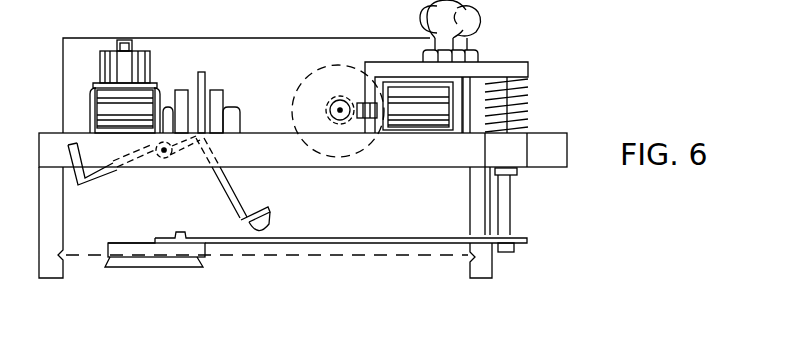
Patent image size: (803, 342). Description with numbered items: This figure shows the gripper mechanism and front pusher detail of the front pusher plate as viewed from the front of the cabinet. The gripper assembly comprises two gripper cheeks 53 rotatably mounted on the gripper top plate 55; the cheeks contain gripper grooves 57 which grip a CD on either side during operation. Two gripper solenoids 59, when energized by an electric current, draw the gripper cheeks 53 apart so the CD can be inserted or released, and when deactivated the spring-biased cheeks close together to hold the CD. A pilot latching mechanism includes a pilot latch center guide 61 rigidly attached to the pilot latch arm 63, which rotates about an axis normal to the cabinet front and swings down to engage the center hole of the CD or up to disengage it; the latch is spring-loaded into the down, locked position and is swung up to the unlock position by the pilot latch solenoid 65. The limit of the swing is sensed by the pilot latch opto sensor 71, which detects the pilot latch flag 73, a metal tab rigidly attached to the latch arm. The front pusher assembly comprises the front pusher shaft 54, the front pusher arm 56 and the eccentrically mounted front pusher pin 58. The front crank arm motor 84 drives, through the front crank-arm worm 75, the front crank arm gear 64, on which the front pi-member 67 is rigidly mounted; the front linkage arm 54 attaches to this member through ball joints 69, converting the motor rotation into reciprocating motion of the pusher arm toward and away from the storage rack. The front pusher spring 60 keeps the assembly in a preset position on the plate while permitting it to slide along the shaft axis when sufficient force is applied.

The gripper cheeks 53 is at (55, 280).
The front pusher shaft 54 is at (515, 206).
The gripper top plate 55 is at (274, 133).
The front pusher arm 56 is at (363, 244).
The gripper grooves 57 is at (66, 254).
The front pusher pin 58 is at (175, 268).
The gripper solenoids 59 is at (103, 103).
The front pusher spring 60 is at (519, 99).
The pilot latch center guide 61 is at (270, 221).
The pilot latch arm 63 is at (196, 154).
The front crank arm gear 64 is at (363, 118).
The pilot latch solenoid 65 is at (120, 67).
The front pi-member 67 is at (397, 62).
The ball joints 69 is at (482, 22).
The pilot latch opto sensor 71 is at (217, 90).
The pilot latch flag 73 is at (201, 72).
The front crank-arm worm 75 is at (305, 143).
The front crank arm motor 84 is at (336, 64).